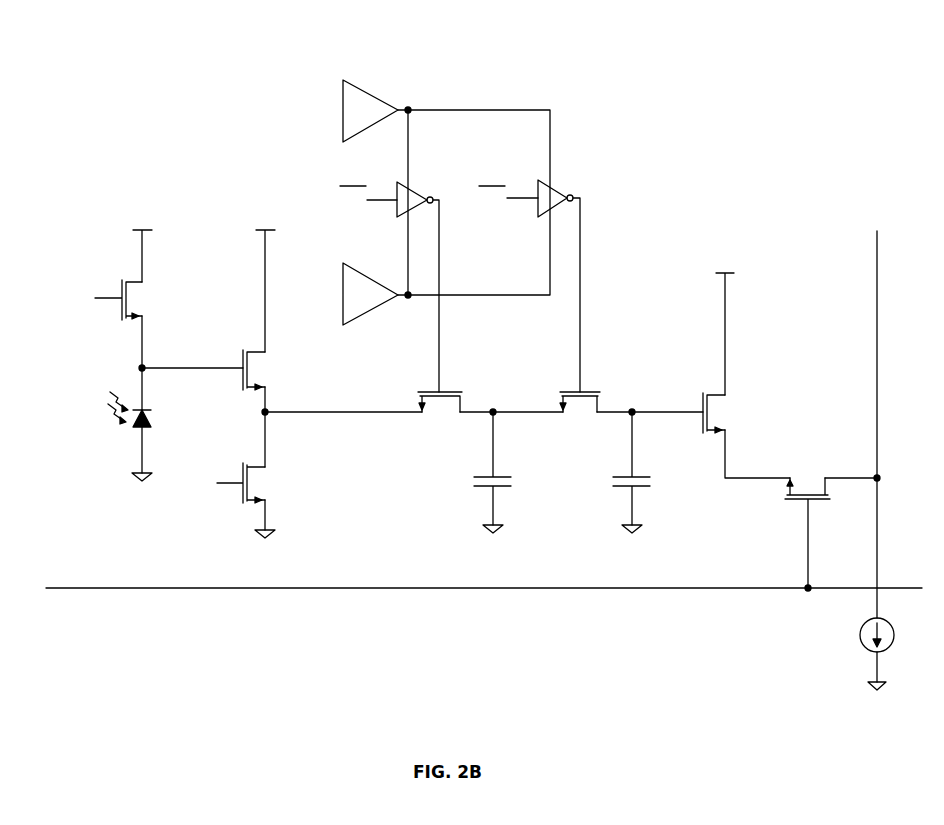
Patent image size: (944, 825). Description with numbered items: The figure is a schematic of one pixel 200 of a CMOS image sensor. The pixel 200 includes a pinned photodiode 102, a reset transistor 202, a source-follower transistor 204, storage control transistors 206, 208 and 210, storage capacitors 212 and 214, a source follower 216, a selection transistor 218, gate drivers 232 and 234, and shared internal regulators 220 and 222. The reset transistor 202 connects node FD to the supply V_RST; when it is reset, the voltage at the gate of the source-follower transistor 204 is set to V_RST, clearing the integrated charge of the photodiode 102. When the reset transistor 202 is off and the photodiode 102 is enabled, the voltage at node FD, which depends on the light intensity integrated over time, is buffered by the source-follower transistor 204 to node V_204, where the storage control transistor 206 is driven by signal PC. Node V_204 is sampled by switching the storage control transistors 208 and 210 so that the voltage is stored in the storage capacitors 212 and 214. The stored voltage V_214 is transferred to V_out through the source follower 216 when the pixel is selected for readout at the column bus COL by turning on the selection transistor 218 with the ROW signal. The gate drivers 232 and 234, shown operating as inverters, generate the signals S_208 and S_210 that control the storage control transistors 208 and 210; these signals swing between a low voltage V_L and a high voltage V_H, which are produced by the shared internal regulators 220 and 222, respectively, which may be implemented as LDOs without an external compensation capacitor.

The pixel 200 is at (157, 55).
The pinned photodiode 102 is at (149, 433).
The reset transistor 202 is at (131, 309).
The source-follower transistor 204 is at (252, 379).
The storage control transistor 206 is at (252, 493).
The storage control transistor 208 is at (425, 414).
The storage control transistor 210 is at (565, 414).
The storage capacitor 212 is at (505, 489).
The storage capacitor 214 is at (644, 489).
The source follower 216 is at (712, 420).
The selection transistor 218 is at (816, 500).
The internal regulator 220 is at (377, 99).
The internal regulator 222 is at (366, 313).
The gate driver 232 is at (419, 194).
The gate driver 234 is at (559, 193).